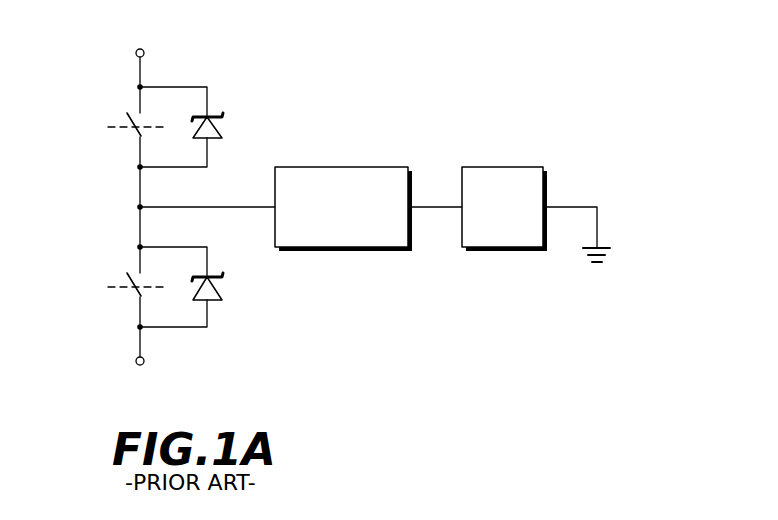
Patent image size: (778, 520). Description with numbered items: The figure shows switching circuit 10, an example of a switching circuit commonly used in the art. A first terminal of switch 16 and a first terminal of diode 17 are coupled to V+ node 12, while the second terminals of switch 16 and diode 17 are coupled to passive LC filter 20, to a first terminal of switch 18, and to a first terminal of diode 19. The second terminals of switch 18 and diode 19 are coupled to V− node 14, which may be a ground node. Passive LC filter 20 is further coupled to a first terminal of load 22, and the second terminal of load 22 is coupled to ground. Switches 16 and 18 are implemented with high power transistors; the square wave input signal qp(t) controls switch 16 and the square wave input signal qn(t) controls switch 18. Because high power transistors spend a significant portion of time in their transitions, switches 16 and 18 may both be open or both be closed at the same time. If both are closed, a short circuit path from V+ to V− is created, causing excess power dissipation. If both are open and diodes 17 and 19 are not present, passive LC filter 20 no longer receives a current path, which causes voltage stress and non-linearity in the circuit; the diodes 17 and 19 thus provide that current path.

The switching circuit 10 is at (541, 65).
The V+ node 12 is at (145, 52).
The V− node 14 is at (145, 361).
The switch 16 is at (133, 134).
The diode 17 is at (218, 130).
The switch 18 is at (132, 295).
The diode 19 is at (218, 290).
The passive LC filter 20 is at (352, 166).
The load 22 is at (512, 166).